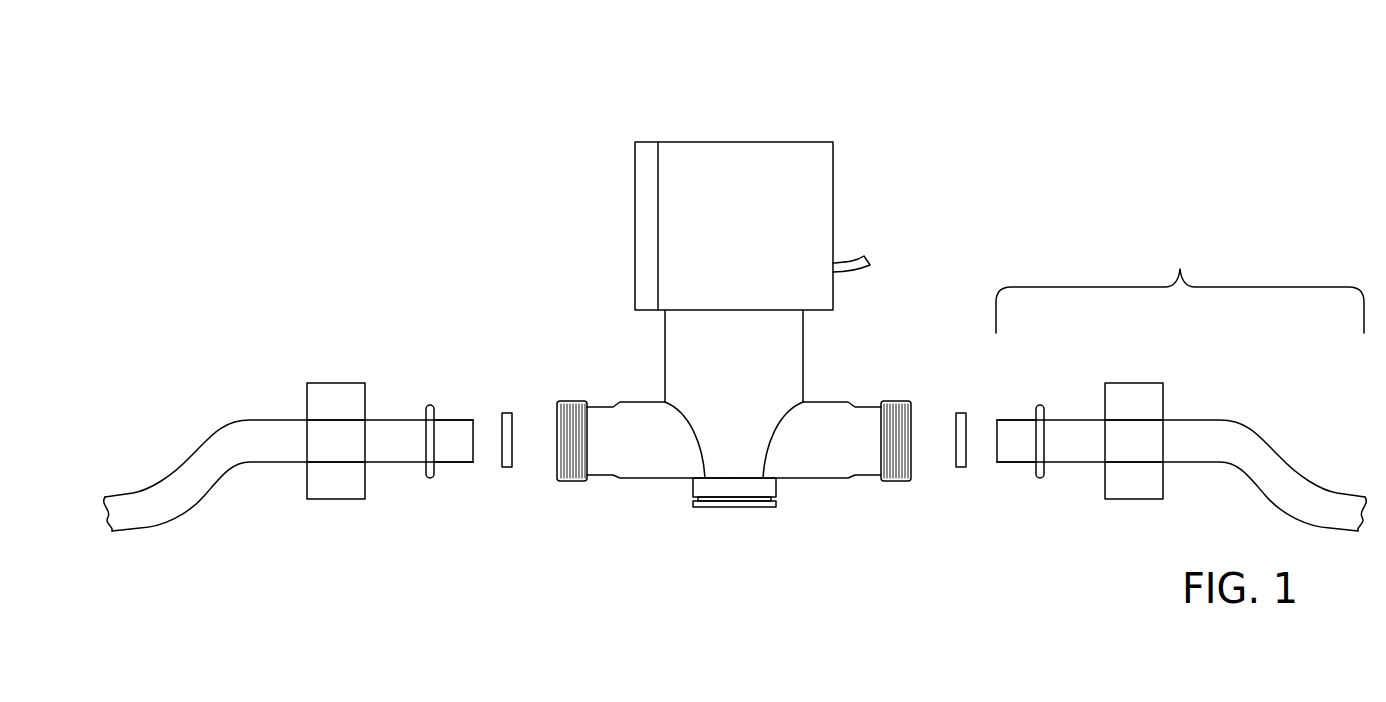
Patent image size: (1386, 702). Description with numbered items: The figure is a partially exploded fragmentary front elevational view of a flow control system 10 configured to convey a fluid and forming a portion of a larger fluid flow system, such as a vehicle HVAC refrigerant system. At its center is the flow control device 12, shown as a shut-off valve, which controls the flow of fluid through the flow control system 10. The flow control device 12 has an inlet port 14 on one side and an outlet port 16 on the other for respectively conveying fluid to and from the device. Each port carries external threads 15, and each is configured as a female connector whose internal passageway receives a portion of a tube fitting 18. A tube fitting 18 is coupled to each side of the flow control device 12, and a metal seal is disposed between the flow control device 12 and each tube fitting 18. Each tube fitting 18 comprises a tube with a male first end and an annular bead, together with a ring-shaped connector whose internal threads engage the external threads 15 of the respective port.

The flow control system 10 is at (975, 58).
The flow control device 12 is at (835, 140).
The inlet port 14 is at (608, 465).
The external threads 15 is at (572, 400).
The outlet port 16 is at (840, 465).
The tube fitting 18 is at (1160, 392).